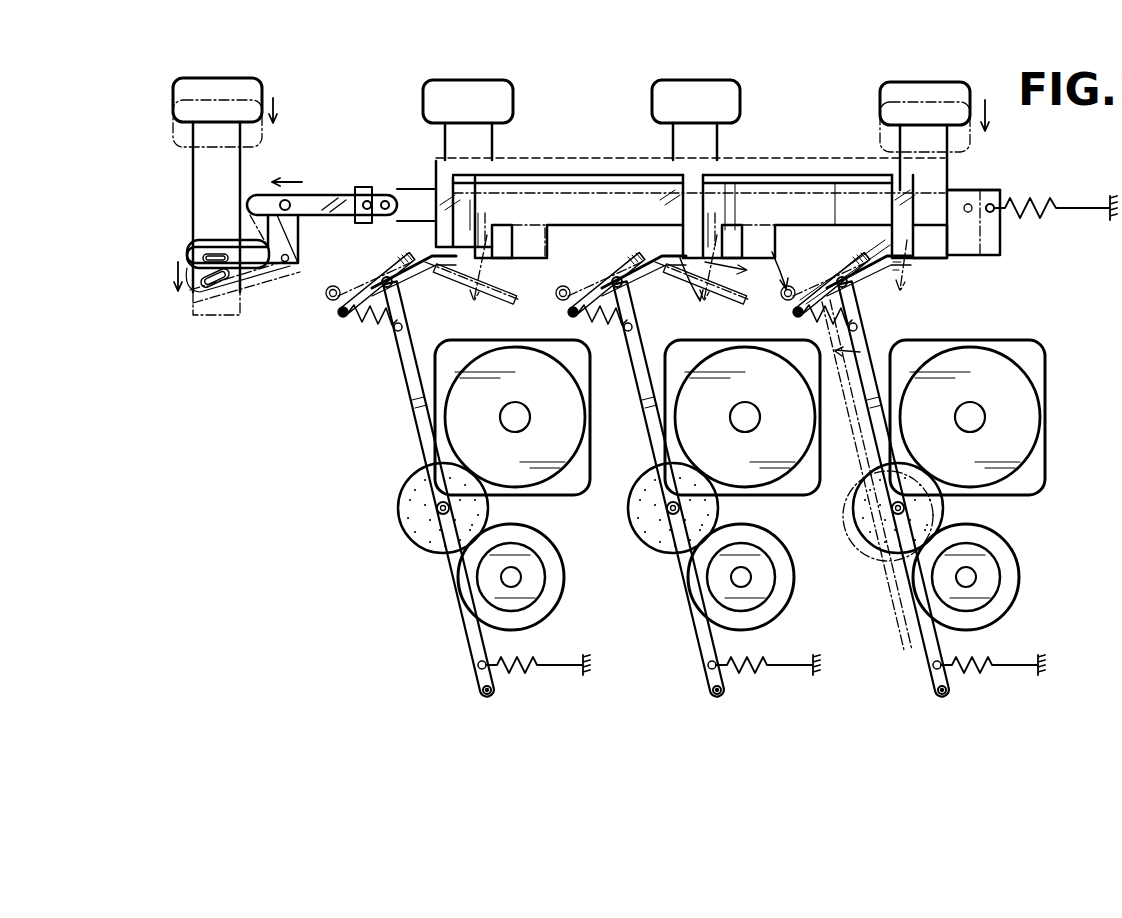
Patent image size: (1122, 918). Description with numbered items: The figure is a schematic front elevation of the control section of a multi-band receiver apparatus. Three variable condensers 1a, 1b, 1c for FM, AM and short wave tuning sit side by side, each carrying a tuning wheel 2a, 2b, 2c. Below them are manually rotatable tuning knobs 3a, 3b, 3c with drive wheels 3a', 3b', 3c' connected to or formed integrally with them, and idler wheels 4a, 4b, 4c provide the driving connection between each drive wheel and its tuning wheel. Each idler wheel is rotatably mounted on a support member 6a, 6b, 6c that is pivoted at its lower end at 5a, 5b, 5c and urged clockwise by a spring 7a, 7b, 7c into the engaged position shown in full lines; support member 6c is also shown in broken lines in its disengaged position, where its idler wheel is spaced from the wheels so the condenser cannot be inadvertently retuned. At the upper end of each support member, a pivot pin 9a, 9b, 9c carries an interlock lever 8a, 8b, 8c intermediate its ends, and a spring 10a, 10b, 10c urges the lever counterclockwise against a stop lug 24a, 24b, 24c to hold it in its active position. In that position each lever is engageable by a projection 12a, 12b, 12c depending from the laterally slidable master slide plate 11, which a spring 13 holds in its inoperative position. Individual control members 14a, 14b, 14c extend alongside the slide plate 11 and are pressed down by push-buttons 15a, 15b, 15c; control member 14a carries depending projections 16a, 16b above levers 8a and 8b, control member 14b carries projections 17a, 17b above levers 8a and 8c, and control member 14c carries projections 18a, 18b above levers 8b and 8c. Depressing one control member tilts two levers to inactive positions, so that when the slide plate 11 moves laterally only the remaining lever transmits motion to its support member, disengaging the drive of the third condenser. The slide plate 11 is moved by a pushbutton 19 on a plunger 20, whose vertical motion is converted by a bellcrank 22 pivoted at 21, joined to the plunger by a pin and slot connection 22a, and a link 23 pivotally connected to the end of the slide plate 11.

The variable condenser 1a is at (580, 385).
The variable condenser 1b is at (818, 430).
The variable condenser 1c is at (1040, 376).
The tuning wheel 2a is at (575, 430).
The tuning wheel 2b is at (805, 455).
The tuning wheel 2c is at (1032, 440).
The tuning knob 3a is at (528, 577).
The tuning knob 3b is at (757, 577).
The tuning knob 3c is at (982, 577).
The drive wheel 3a' is at (530, 577).
The drive wheel 3b' is at (757, 577).
The drive wheel 3c' is at (984, 577).
The idler wheel 4a is at (408, 517).
The idler wheel 4b is at (640, 517).
The idler wheel 4c is at (862, 520).
The pivot 5a is at (488, 695).
The pivot 5b is at (718, 695).
The pivot 5c is at (943, 695).
The support member 6a is at (456, 572).
The support member 6b is at (683, 570).
The support member 6c is at (908, 570).
The spring 7a is at (520, 670).
The spring 7b is at (755, 670).
The spring 7c is at (982, 670).
The interlock lever 8a is at (472, 282).
The interlock lever 8b is at (721, 282).
The interlock lever 8c is at (909, 275).
The pivot pin 9a is at (394, 287).
The pivot pin 9b is at (624, 287).
The pivot pin 9c is at (848, 287).
The spring 10a is at (366, 322).
The spring 10b is at (604, 326).
The spring 10c is at (858, 327).
The slide plate 11 is at (590, 178).
The projection 12a is at (512, 258).
The projection 12b is at (776, 258).
The projection 12c is at (990, 258).
The spring 13 is at (1044, 204).
The individual control member 14a is at (948, 165).
The individual control member 14b is at (719, 145).
The individual control member 14c is at (494, 145).
The push-button 15a is at (924, 82).
The push-button 15b is at (694, 82).
The push-button 15c is at (466, 82).
The depending projection 16a is at (482, 230).
The depending projection 16b is at (743, 249).
The depending projection 17a is at (432, 248).
The depending projection 17b is at (936, 259).
The depending projection 18a is at (676, 250).
The depending projection 18b is at (892, 250).
The pushbutton 19 is at (209, 73).
The plunger 20 is at (193, 170).
The pivot 21 is at (290, 260).
The bellcrank 22 is at (280, 270).
The pin and slot connection 22a is at (188, 252).
The link 23 is at (338, 196).
The stop lug 24a is at (396, 266).
The stop lug 24b is at (626, 266).
The stop lug 24c is at (834, 262).